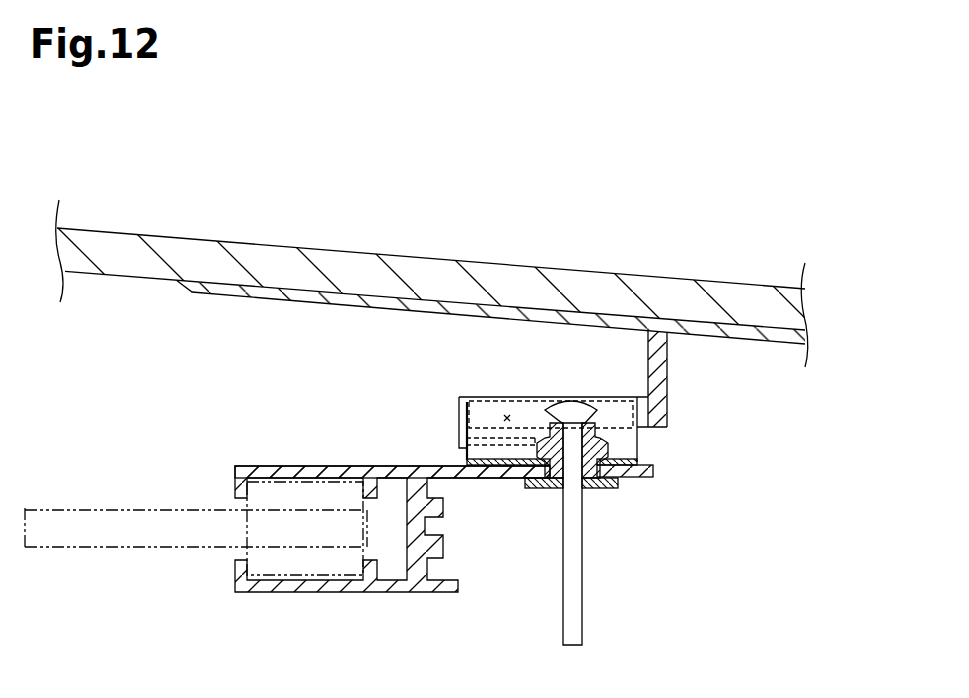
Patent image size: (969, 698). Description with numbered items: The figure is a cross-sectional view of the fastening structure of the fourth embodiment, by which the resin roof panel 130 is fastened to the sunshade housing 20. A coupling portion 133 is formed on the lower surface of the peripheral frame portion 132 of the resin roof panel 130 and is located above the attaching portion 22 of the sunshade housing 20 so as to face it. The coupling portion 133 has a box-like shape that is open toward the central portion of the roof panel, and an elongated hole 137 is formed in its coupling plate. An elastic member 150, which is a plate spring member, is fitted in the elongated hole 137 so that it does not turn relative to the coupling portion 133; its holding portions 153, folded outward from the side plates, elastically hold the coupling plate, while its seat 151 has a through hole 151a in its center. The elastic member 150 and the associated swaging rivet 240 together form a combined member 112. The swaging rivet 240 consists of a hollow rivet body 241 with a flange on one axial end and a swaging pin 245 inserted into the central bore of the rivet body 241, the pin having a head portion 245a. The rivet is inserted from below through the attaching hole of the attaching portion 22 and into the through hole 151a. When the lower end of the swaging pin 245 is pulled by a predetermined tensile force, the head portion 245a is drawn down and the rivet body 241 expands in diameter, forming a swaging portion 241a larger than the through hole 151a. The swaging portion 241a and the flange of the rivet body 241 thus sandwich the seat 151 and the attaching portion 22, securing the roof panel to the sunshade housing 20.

The resin roof panel 130 is at (368, 241).
The peripheral frame portion 132 is at (395, 318).
The coupling portion 133 is at (681, 390).
The combined member 112 is at (458, 383).
The elongated hole 137 is at (507, 415).
The elastic member 150 is at (458, 422).
The rivet body 241 is at (596, 426).
The head portion 245a is at (562, 408).
The swaging pin 245 is at (580, 548).
The swaging portion 241a is at (610, 447).
The seat 151 is at (493, 479).
The holding portion 153 is at (530, 488).
The through hole 151a is at (563, 488).
The swaging rivet 240 is at (605, 503).
The sunshade housing 20 is at (319, 458).
The attaching portion 22 is at (440, 458).